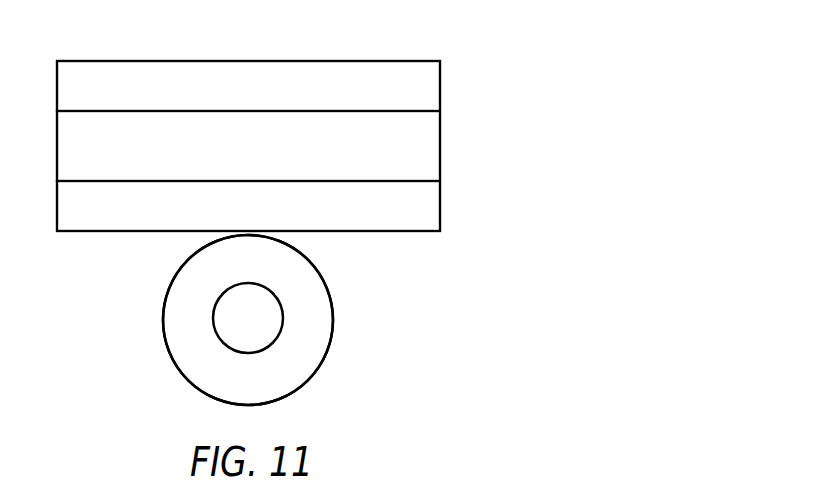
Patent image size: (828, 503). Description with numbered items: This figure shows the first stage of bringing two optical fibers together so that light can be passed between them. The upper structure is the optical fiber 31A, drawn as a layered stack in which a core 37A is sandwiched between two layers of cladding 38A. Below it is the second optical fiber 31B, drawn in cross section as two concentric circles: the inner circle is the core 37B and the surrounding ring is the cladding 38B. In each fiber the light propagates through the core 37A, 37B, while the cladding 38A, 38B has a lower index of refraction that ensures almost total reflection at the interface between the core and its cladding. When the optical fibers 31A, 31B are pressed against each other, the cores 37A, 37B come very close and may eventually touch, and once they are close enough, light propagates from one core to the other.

The optical fiber 31A is at (393, 58).
The core 37A is at (427, 152).
The cladding 38A is at (427, 210).
The optical fiber 31B is at (183, 372).
The core 37B is at (253, 337).
The cladding 38B is at (318, 322).